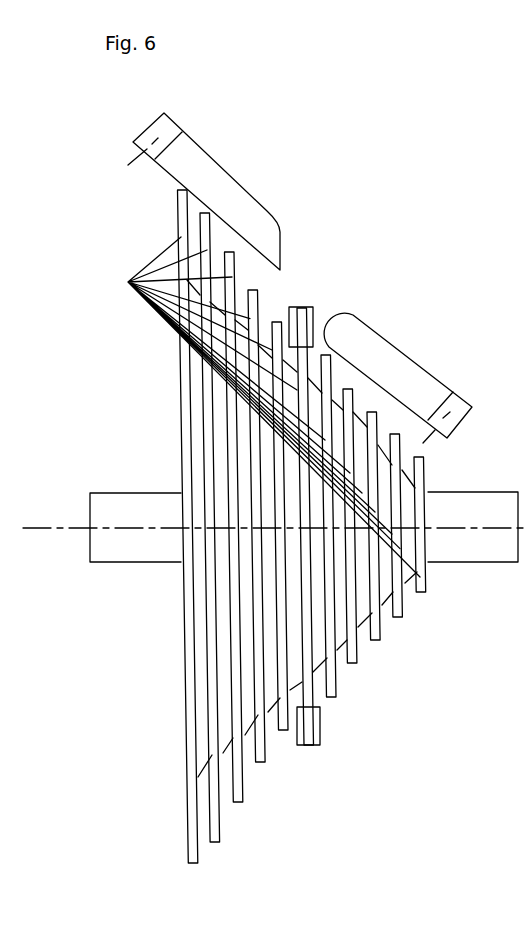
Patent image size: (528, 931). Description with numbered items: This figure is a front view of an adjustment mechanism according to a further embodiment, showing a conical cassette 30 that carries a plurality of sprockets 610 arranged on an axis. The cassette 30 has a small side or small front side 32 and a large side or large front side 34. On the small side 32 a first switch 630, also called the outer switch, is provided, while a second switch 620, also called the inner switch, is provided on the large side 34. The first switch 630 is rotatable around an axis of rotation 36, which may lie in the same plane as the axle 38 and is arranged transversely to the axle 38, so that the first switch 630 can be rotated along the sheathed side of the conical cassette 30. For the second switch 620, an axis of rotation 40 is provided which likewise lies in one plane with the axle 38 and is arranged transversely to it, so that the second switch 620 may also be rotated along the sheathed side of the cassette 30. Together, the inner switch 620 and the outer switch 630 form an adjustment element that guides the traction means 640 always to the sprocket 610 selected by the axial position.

The cassette 30 is at (102, 732).
The small side 32 is at (430, 572).
The large side 34 is at (177, 410).
The axis of rotation 36 is at (455, 407).
The axle 38 is at (31, 534).
The axis of rotation 40 is at (157, 113).
The sprocket 610 is at (252, 407).
The second switch 620 is at (217, 186).
The first switch 630 is at (357, 337).
The traction means 640 is at (312, 310).